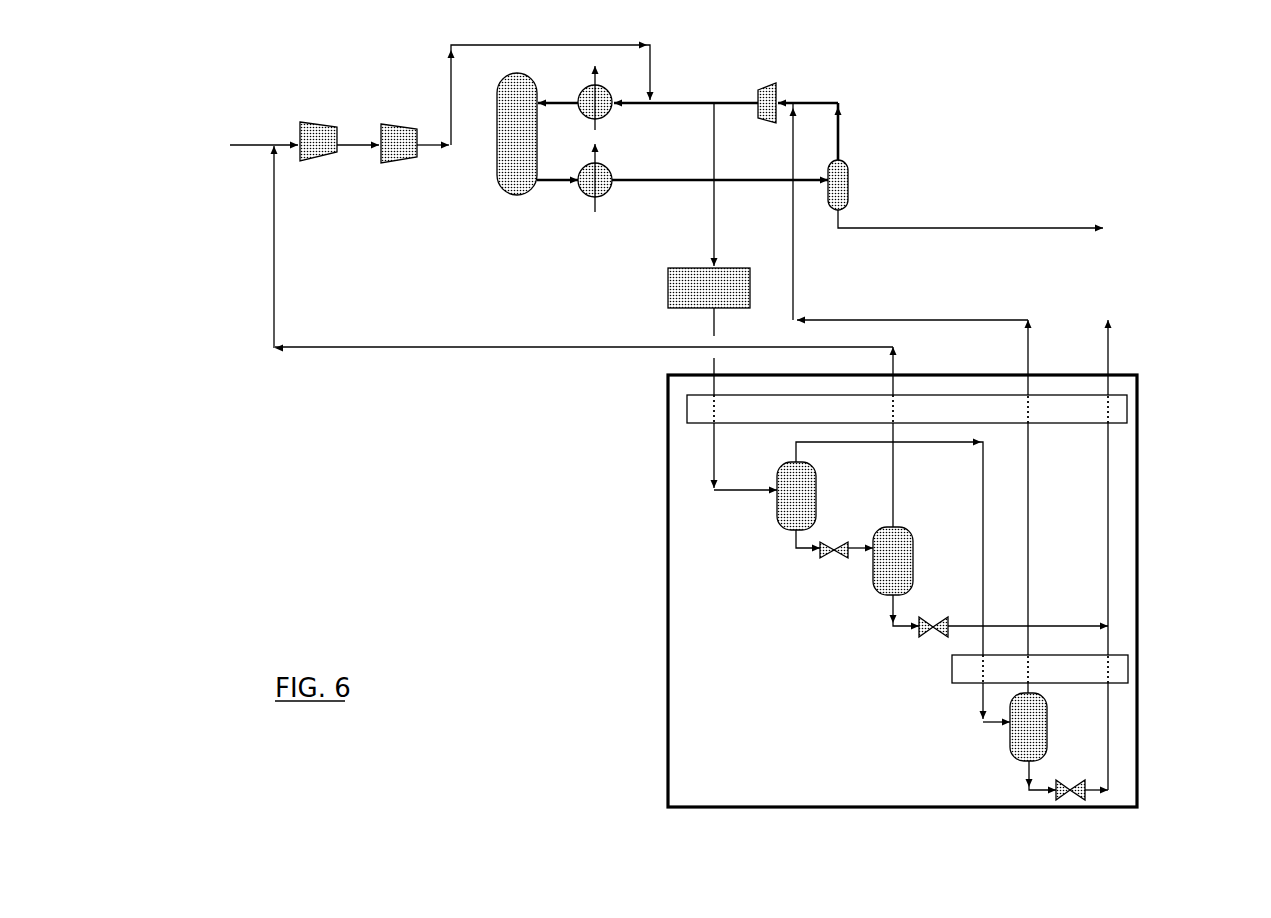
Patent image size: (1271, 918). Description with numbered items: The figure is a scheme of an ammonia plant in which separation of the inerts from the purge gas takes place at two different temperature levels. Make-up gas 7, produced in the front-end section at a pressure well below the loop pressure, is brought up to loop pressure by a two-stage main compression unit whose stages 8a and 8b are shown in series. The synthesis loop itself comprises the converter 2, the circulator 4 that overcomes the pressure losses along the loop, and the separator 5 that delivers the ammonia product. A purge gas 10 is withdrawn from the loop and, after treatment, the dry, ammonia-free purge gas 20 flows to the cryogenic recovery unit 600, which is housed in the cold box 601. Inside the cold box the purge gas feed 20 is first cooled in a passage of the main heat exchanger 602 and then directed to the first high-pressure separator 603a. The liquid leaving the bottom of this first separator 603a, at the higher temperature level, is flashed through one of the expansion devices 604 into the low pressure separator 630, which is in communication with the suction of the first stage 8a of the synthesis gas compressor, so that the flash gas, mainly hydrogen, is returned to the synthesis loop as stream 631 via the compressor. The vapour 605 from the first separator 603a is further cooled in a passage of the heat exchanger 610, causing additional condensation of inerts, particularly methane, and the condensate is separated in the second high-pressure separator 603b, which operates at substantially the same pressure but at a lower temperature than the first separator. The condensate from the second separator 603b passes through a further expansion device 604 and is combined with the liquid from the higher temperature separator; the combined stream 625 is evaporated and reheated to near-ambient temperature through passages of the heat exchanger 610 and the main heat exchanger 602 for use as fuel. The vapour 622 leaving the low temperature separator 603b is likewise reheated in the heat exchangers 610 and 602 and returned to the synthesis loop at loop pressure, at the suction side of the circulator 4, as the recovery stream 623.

The make-up gas 7 is at (248, 145).
The first stage of the compressor 8a is at (322, 152).
The second stage of the compressor 8b is at (399, 153).
The converter 2 is at (514, 191).
The circulator 4 is at (760, 88).
The separator 5 is at (849, 185).
The purge gas 10 is at (714, 222).
The dry, ammonia-free purge gas 20 is at (714, 325).
The recovery unit 600 is at (1178, 503).
The cold box 601 is at (1139, 603).
The main heat exchanger 602 is at (1122, 408).
The first high-pressure separator 603a is at (785, 508).
The second high-pressure separator 603b is at (1018, 745).
The expansion devices 604 is at (828, 562).
The vapour from the first separator 605 is at (920, 445).
The heat exchanger 610 is at (1129, 673).
The vapour leaving the low temperature separator 622 is at (1030, 465).
The recovery stream 623 is at (890, 315).
The combined stream 625 is at (1110, 508).
The low pressure separator 630 is at (913, 560).
The stream returned to the synthesis loop 631 is at (465, 350).